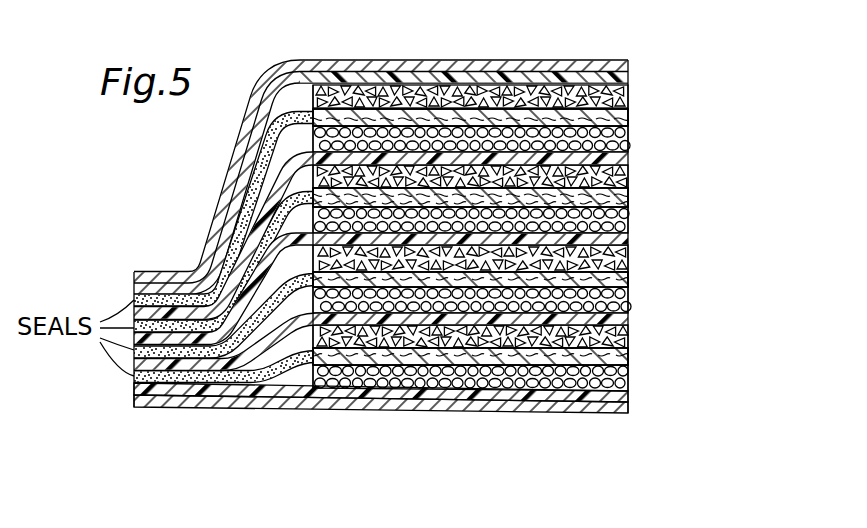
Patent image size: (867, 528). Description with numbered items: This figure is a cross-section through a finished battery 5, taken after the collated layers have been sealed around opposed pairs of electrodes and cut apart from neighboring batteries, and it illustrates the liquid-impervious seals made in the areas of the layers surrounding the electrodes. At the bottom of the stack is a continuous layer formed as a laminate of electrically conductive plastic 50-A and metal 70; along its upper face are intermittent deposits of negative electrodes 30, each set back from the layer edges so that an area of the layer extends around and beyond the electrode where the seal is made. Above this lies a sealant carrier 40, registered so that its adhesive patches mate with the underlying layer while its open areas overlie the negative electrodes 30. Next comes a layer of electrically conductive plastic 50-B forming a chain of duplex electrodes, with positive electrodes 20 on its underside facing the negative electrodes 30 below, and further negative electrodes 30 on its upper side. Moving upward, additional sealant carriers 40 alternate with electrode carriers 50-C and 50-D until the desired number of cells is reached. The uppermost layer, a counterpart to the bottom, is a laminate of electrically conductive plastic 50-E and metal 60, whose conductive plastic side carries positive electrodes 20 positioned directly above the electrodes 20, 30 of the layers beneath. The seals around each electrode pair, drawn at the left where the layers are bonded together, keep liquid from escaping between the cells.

The battery 5 is at (482, 60).
The metal 60 is at (630, 68).
The metal 70 is at (630, 408).
The positive electrodes 20 is at (630, 99).
The negative electrodes 30 is at (630, 143).
The sealant carrier 40 is at (630, 122).
The electrically conductive plastic 50-A is at (630, 398).
The electrically conductive plastic 50-B is at (630, 322).
The electrode carrier 50-C is at (630, 243).
The electrode carrier 50-D is at (630, 163).
The electrically conductive plastic 50-E is at (630, 78).